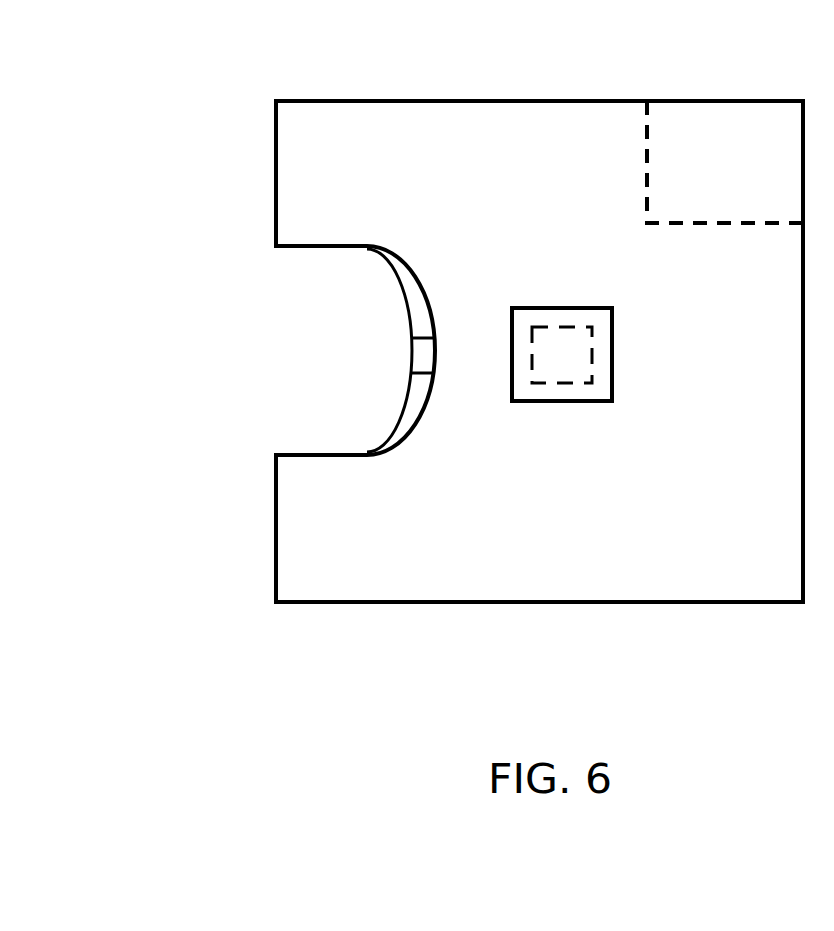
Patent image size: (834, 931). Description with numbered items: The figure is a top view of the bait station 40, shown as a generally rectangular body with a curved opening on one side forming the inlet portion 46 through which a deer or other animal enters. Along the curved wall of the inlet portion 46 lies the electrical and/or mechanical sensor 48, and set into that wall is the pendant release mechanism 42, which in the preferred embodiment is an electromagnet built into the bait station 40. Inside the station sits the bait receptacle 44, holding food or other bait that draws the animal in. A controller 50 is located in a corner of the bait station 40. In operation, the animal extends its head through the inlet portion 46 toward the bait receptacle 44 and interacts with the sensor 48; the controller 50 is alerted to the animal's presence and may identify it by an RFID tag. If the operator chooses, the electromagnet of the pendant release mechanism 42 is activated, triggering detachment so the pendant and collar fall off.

The bait station 40 is at (186, 146).
The pendant release mechanism 42 is at (407, 350).
The bait receptacle 44 is at (560, 401).
The inlet portion 46 is at (241, 327).
The sensor 48 is at (385, 425).
The controller 50 is at (725, 162).